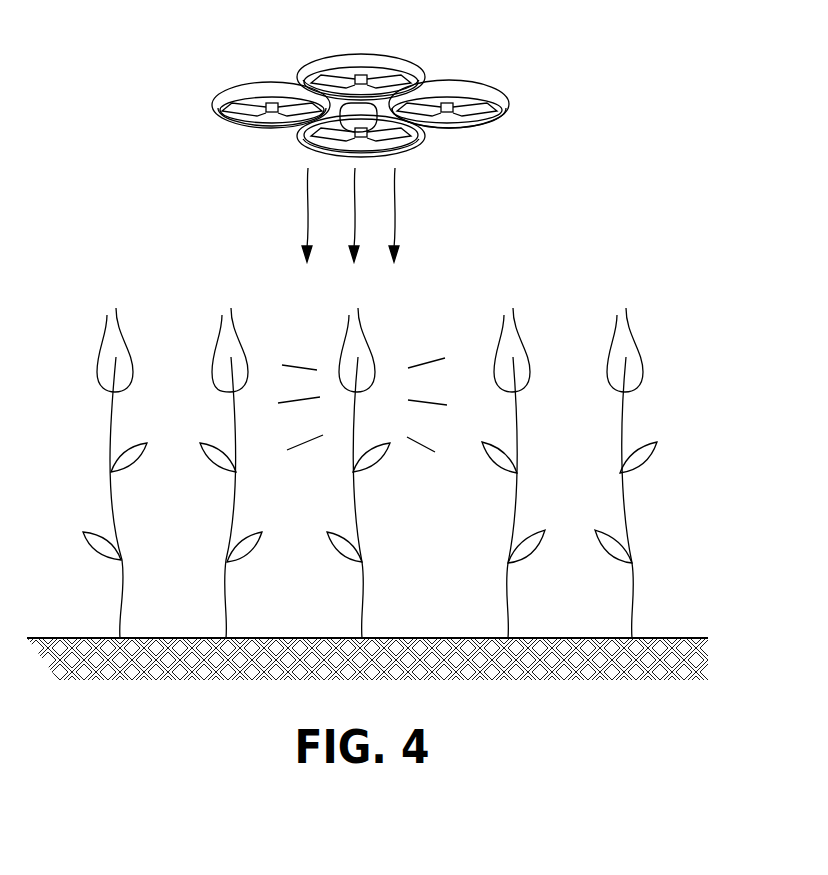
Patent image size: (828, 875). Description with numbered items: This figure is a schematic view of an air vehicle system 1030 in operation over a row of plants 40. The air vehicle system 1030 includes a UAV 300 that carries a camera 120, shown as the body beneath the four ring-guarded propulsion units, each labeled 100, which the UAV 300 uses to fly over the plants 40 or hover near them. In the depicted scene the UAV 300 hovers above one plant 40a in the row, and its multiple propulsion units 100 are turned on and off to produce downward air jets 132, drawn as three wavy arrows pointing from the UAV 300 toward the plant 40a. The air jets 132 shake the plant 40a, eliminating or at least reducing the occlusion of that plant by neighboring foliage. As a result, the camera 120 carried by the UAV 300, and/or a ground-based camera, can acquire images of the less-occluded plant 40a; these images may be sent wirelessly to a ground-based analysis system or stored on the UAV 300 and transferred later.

The air vehicle system 1030 is at (203, 67).
The rotor assembly 100 is at (330, 80).
The UAV 300 is at (477, 85).
The camera 120 is at (397, 134).
The air jets 132 is at (305, 212).
The plants 40 is at (652, 410).
The plant 40a is at (360, 532).